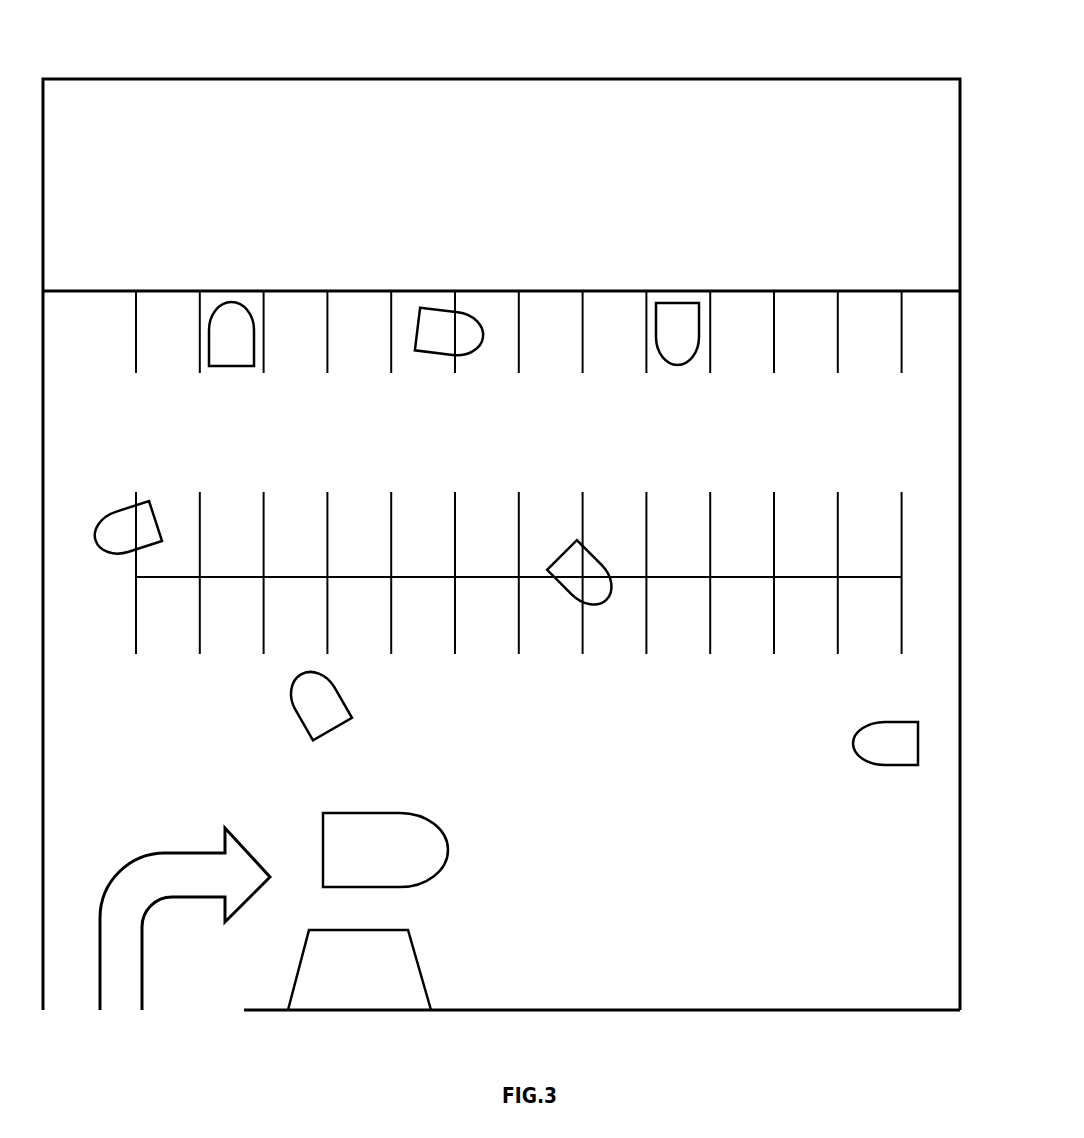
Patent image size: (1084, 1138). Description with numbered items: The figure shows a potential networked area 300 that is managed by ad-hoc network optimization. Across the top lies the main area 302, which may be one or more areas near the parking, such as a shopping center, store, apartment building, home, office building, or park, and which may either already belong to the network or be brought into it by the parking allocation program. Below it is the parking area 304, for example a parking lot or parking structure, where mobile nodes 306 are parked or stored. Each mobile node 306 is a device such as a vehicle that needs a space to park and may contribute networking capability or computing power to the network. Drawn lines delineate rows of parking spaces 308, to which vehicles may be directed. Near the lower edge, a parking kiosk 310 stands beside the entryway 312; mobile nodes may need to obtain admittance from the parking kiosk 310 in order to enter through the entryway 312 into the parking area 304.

The networked area 300 is at (714, 42).
The main area 302 is at (525, 217).
The parking area 304 is at (524, 650).
The mobile node 306 is at (369, 873).
The parking space 308 is at (837, 496).
The parking kiosk 310 is at (401, 988).
The entryway 312 is at (245, 888).